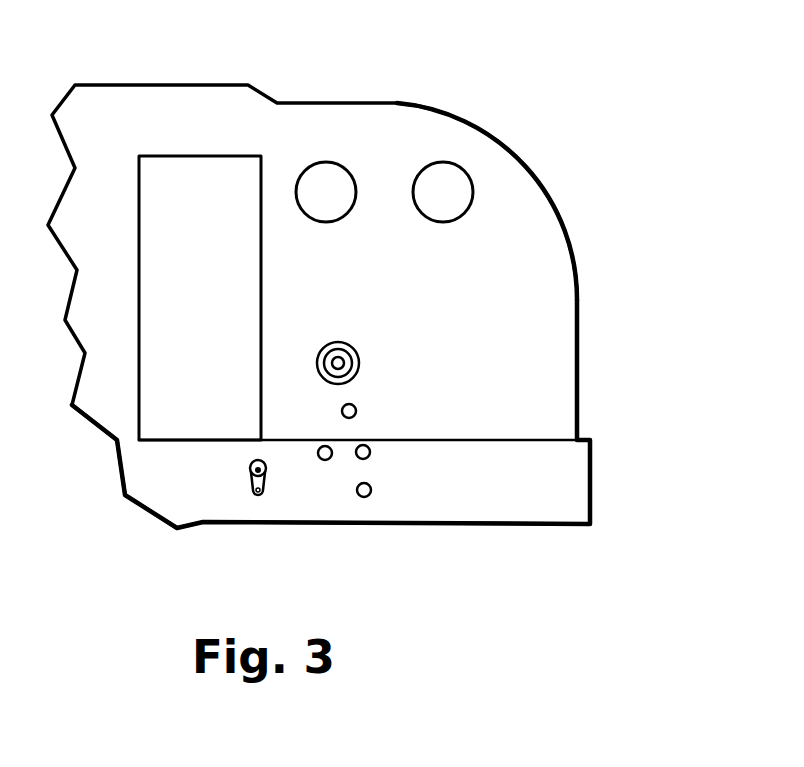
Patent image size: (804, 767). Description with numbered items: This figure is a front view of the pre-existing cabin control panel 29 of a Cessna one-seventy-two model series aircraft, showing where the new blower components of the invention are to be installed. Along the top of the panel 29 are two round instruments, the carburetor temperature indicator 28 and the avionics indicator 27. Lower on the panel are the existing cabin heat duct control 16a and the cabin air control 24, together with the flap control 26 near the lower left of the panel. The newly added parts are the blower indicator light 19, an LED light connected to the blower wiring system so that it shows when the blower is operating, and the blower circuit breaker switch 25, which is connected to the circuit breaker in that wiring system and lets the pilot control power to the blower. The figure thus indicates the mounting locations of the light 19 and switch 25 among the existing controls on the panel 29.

The control panel 29 is at (552, 173).
The carburetor temperature indicator 28 is at (330, 168).
The avionics indicator 27 is at (450, 170).
The blower indicator light 19 is at (357, 410).
The blower circuit breaker switch 25 is at (327, 460).
The cabin air control 24 is at (369, 495).
The cabin heat duct control 16a is at (371, 450).
The flap control 26 is at (258, 497).